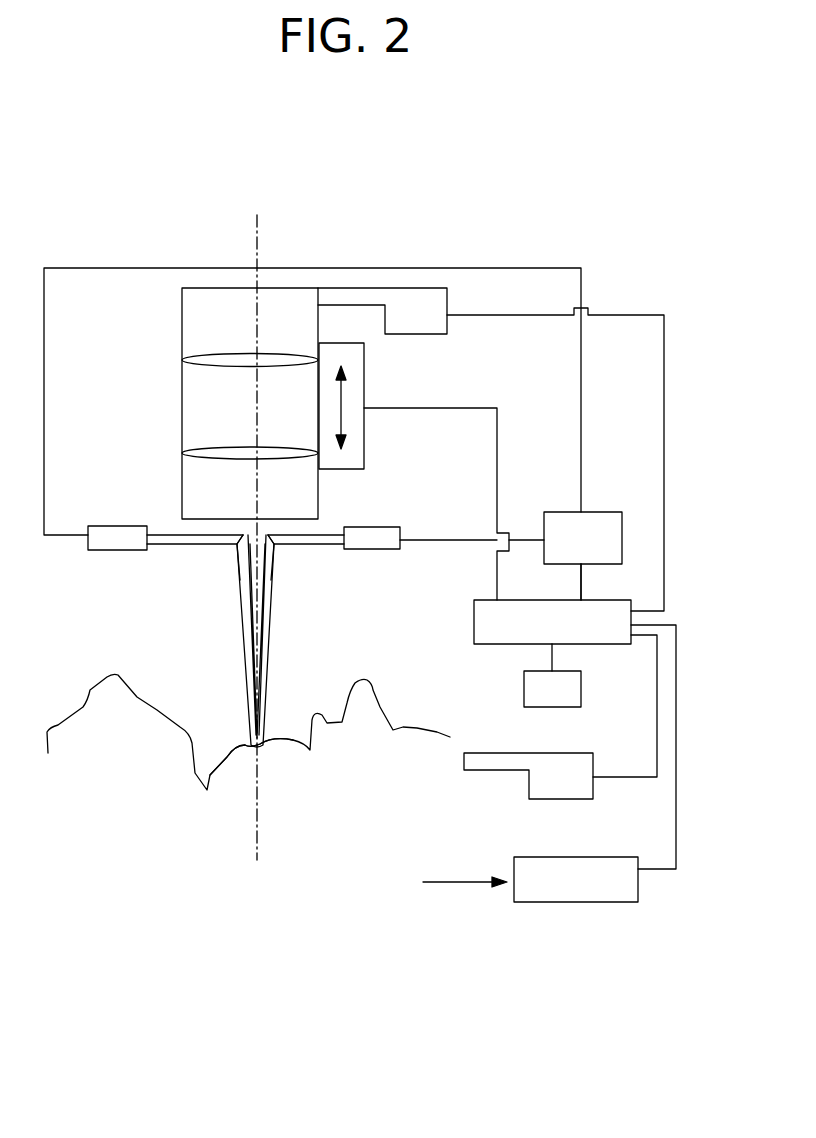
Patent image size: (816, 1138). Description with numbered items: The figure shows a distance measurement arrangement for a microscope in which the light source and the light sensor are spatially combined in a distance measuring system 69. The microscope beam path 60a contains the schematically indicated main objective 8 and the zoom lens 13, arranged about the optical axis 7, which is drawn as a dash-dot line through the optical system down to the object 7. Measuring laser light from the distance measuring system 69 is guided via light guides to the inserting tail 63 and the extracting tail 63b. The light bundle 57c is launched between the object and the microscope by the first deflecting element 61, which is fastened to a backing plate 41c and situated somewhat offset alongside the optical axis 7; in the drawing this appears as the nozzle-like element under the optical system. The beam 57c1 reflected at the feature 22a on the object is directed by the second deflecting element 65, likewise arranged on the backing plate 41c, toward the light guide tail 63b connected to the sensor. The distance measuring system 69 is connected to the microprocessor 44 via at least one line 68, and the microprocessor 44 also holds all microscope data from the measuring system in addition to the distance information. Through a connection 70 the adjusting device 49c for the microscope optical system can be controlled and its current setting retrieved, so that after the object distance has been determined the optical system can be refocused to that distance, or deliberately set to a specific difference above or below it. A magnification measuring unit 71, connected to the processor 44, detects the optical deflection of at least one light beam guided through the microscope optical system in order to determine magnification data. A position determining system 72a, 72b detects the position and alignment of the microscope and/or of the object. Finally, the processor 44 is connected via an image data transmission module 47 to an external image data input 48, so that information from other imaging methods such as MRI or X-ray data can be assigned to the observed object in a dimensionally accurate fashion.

The optical axis 7 is at (253, 805).
The main objective 8 is at (182, 452).
The zoom lens 13 is at (182, 362).
The feature on the object 22a is at (237, 735).
The backing plate 41c is at (181, 524).
The microprocessor 44 is at (474, 615).
The image data transmission module 47 is at (605, 902).
The external image data input 48 is at (465, 891).
The adjusting device 49c is at (352, 334).
The light bundle 57c is at (243, 655).
The reflected beam 57c1 is at (268, 667).
The microscope beam path 60a is at (182, 400).
The deflecting element 61 is at (237, 543).
The distance sensor 63 is at (110, 550).
The light guide tail 63b is at (363, 549).
The second deflecting element 65 is at (279, 547).
The line 68 is at (581, 583).
The distance measuring system 69 is at (622, 535).
The connection 70 is at (470, 408).
The magnification measuring unit 71 is at (524, 688).
The position determining system 72a is at (388, 288).
The position determining system 72b is at (528, 783).